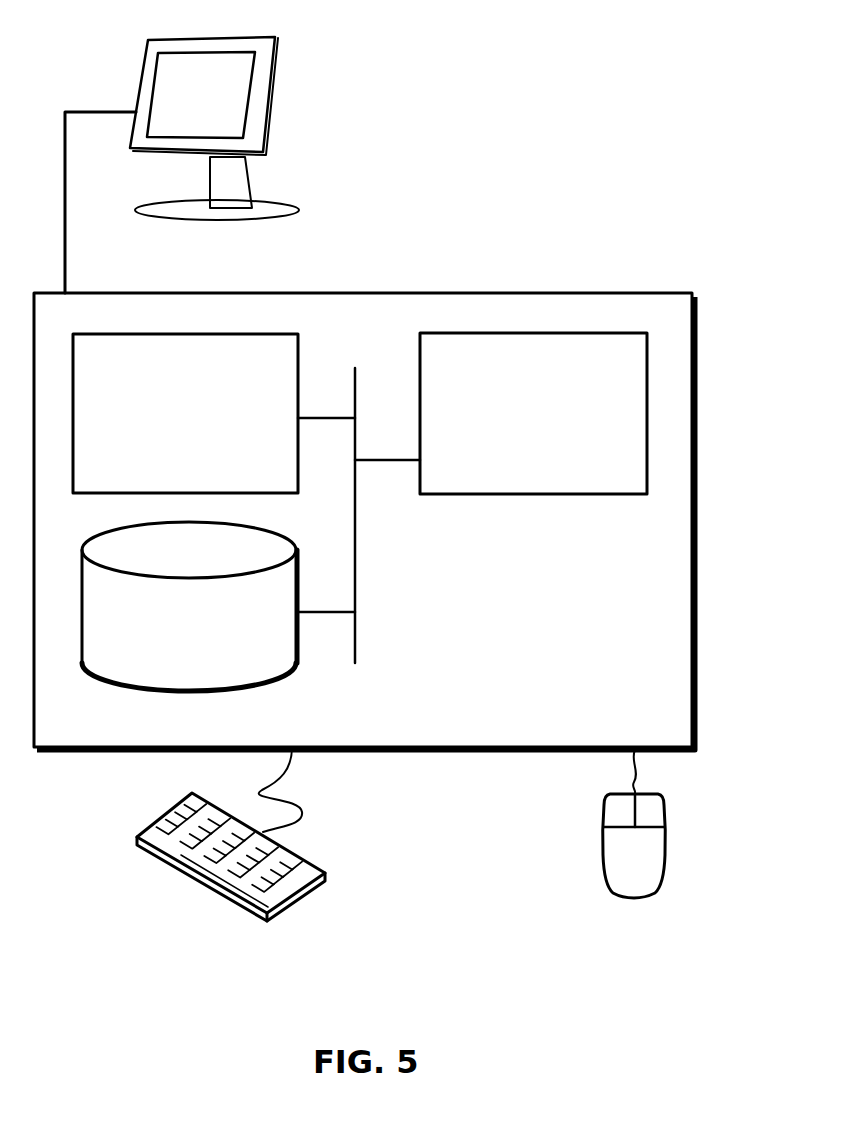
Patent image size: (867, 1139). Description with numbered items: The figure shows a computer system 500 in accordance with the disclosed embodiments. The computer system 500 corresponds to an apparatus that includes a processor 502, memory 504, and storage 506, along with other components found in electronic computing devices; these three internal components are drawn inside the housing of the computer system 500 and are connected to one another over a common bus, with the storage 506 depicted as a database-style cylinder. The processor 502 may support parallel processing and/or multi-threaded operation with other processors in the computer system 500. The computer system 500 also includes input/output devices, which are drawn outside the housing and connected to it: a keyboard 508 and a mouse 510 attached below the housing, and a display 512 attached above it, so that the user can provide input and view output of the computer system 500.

The computer system 500 is at (410, 270).
The processor 502 is at (558, 425).
The memory 504 is at (207, 425).
The storage 506 is at (212, 635).
The keyboard 508 is at (157, 855).
The mouse 510 is at (655, 870).
The display 512 is at (182, 165).